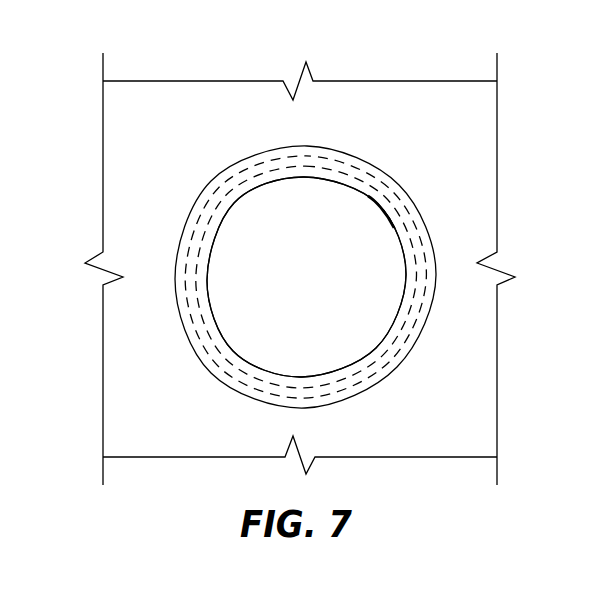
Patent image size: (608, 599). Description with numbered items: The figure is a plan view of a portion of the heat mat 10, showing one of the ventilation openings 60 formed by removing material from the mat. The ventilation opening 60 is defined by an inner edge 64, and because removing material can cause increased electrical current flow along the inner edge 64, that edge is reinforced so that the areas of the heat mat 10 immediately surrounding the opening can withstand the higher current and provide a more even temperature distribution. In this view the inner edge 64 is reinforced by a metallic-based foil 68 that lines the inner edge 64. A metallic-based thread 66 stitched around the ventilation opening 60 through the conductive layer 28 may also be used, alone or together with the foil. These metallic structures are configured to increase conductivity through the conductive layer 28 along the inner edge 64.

The heat mat 10 is at (338, 251).
The conductive layer 28 is at (482, 128).
The ventilation opening 60 is at (338, 213).
The inner edge 64 is at (392, 233).
The metallic-based thread 66 is at (413, 327).
The metallic-based foil 68 is at (405, 352).